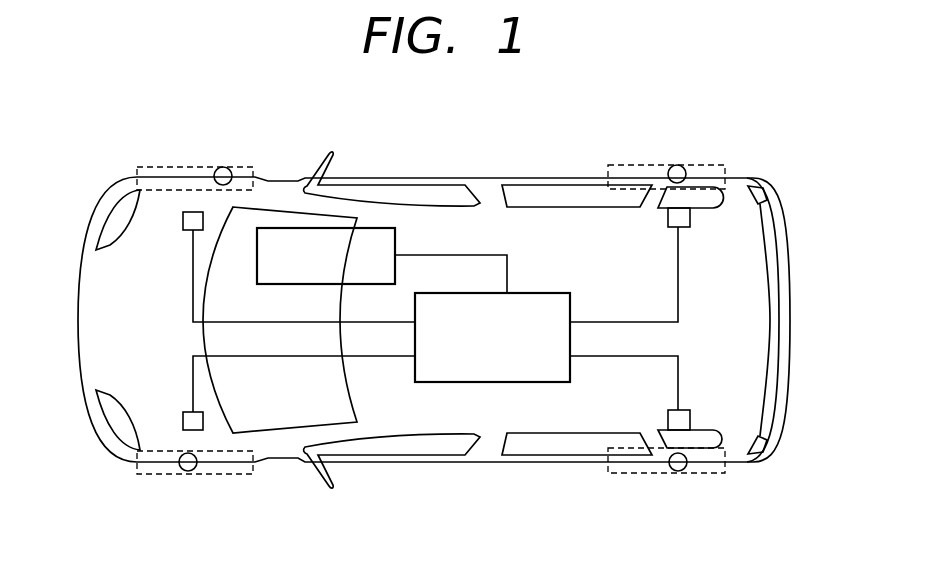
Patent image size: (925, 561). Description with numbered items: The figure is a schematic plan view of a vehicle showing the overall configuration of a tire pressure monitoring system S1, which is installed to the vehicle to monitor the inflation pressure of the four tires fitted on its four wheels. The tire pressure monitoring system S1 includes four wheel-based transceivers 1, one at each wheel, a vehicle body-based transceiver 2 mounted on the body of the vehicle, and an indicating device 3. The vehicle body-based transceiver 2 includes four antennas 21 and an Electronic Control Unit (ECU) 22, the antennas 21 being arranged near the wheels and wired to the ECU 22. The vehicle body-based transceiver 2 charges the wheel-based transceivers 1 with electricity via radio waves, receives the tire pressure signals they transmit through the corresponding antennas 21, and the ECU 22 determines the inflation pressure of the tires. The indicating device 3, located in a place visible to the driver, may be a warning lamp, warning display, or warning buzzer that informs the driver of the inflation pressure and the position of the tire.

The tire pressure monitoring system S1 is at (747, 87).
The wheel-based transceiver 1 is at (223, 167).
The vehicle body-based transceiver 2 is at (435, 273).
The antenna 21 is at (183, 219).
The Electronic Control Unit (ECU) 22 is at (538, 293).
The indicating device 3 is at (370, 228).